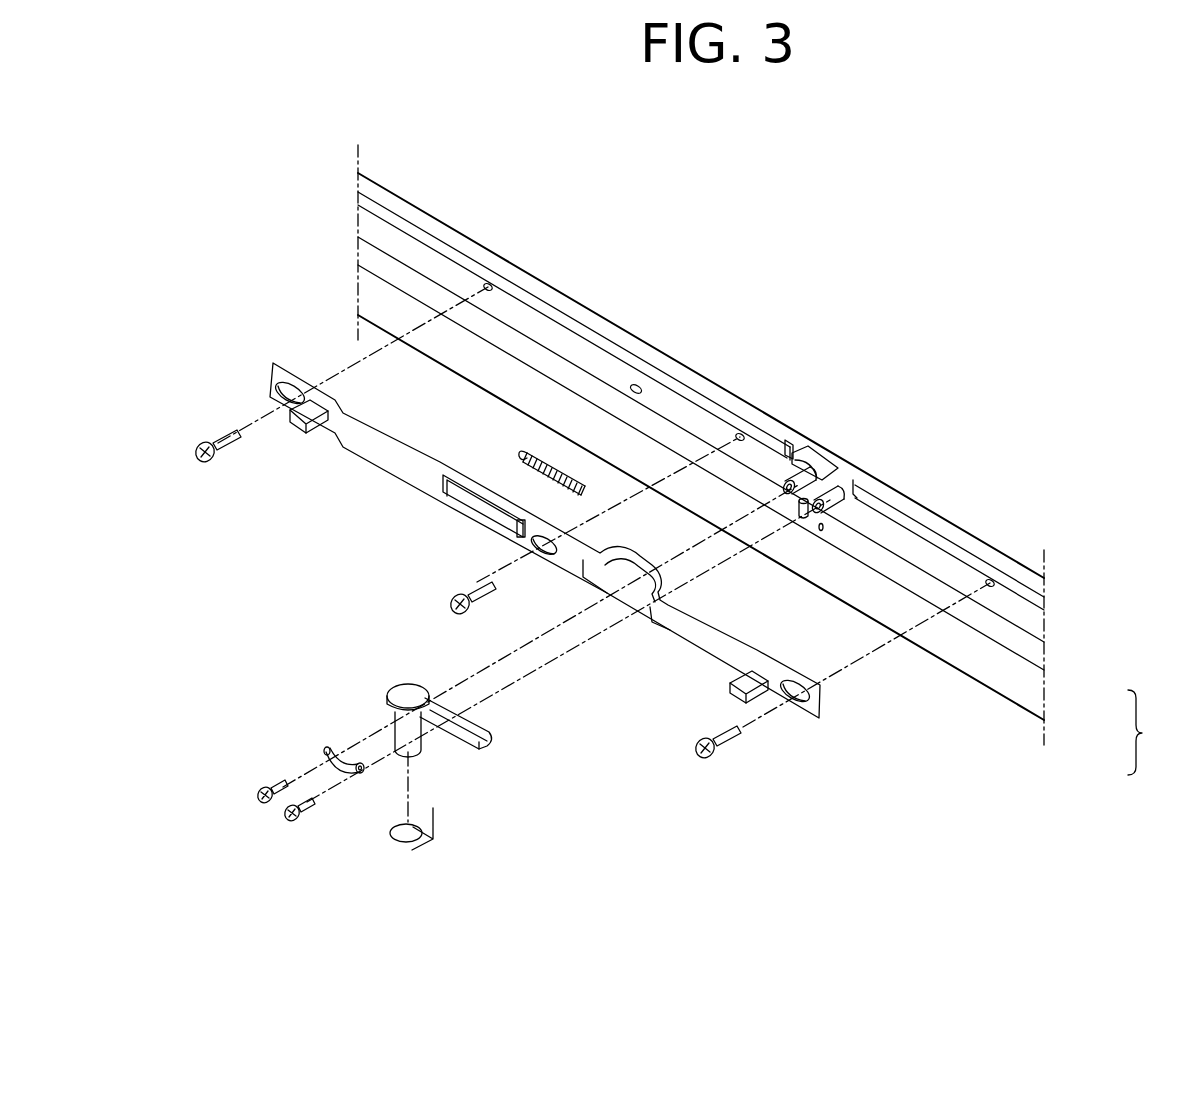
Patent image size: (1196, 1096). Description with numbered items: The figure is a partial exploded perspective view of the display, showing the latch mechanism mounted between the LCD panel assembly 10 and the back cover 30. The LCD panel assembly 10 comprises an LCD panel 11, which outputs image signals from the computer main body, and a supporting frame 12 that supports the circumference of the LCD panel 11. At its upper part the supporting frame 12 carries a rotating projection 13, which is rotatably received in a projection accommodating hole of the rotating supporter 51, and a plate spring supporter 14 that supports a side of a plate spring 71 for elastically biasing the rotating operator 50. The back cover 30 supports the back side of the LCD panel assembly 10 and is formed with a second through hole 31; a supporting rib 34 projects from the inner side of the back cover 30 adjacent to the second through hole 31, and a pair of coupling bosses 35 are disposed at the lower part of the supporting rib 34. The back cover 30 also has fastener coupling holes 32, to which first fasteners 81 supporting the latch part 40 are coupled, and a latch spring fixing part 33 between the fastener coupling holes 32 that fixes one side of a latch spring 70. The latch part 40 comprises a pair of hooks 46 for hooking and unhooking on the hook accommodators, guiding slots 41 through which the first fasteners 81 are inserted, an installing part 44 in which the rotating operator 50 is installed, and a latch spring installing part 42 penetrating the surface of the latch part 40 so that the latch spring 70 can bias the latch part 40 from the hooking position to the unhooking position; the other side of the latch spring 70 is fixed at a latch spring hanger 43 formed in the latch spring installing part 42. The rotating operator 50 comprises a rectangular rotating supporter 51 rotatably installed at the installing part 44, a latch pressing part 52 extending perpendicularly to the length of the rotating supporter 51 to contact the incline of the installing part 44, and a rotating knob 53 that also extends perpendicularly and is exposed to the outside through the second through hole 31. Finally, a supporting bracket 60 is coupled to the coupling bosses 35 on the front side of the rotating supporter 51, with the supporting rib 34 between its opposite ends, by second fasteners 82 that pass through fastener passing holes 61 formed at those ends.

The LCD panel assembly 10 is at (1147, 743).
The LCD panel 11 is at (988, 737).
The supporting frame 12 is at (1046, 686).
The rotating projection 13 is at (793, 522).
The plate spring supporter 14 is at (821, 530).
The back cover 30 is at (930, 520).
The second through hole 31 is at (853, 470).
The fastener coupling holes 32 is at (489, 285).
The latch spring fixing part 33 is at (640, 387).
The supporting rib 34 is at (823, 456).
The coupling bosses 35 is at (798, 470).
The latch part 40 is at (575, 599).
The guiding slots 41 is at (283, 405).
The latch spring installing part 42 is at (445, 480).
The latch spring hanger 43 is at (518, 525).
The installing part 44 is at (633, 592).
The hooks 46 is at (305, 437).
The rotating operator 50 is at (428, 743).
The rotating supporter 51 is at (393, 725).
The latch pressing part 52 is at (428, 748).
The rotating knob 53 is at (488, 740).
The supporting bracket 60 is at (337, 785).
The fastener passing holes 61 is at (360, 782).
The latch spring 70 is at (548, 455).
The plate spring 71 is at (420, 853).
The first fasteners 81 is at (205, 458).
The second fasteners 82 is at (265, 806).